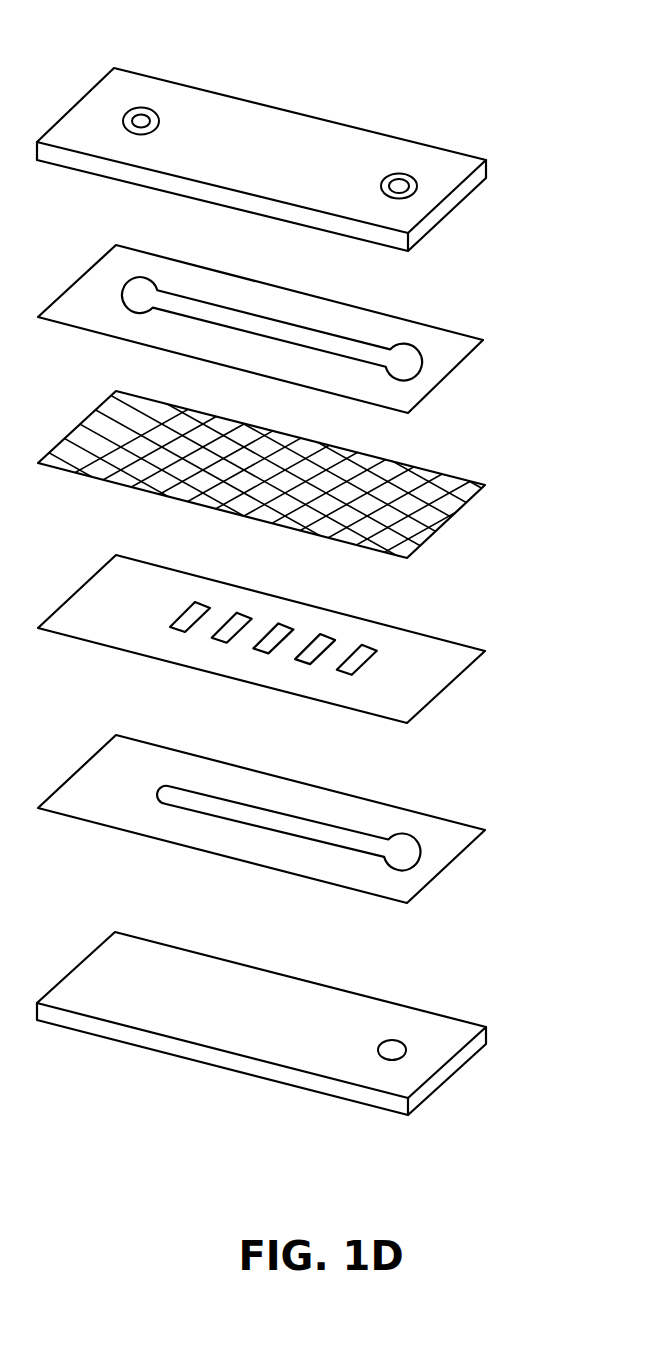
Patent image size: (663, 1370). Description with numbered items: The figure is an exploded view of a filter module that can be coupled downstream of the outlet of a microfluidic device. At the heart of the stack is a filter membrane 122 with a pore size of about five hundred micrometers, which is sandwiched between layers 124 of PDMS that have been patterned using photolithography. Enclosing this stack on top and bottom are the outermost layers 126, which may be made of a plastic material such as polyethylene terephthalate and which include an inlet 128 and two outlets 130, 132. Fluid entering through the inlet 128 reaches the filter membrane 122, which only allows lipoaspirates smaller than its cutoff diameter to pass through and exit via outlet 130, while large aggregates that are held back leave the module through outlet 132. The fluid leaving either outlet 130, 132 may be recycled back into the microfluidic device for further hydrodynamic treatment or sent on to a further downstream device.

The filter membrane 122 is at (447, 522).
The layers 124 is at (447, 378).
The outermost layers 126 is at (457, 166).
The inlet 128 is at (143, 109).
The outlet 130 is at (390, 1061).
The outlet 132 is at (400, 175).